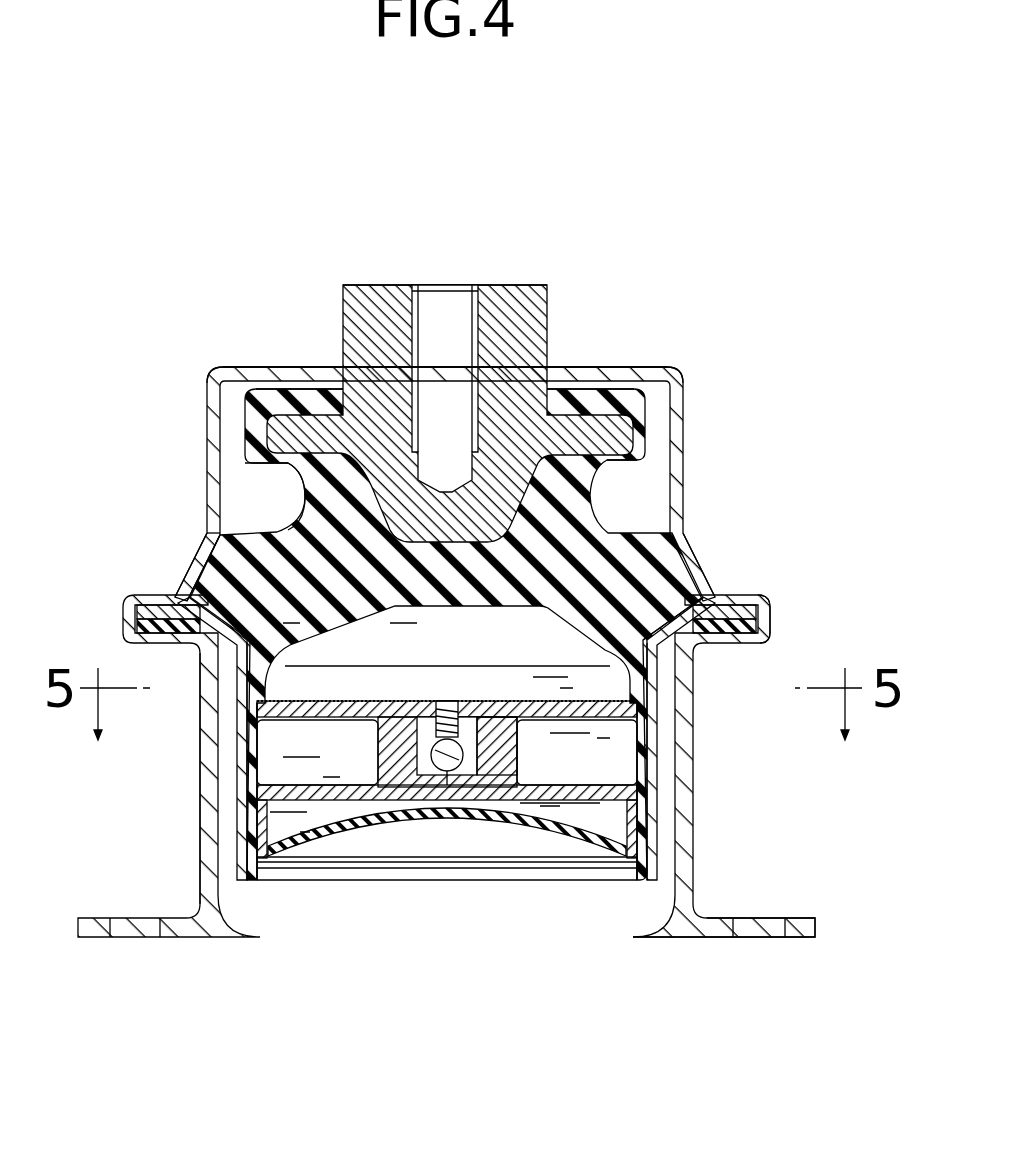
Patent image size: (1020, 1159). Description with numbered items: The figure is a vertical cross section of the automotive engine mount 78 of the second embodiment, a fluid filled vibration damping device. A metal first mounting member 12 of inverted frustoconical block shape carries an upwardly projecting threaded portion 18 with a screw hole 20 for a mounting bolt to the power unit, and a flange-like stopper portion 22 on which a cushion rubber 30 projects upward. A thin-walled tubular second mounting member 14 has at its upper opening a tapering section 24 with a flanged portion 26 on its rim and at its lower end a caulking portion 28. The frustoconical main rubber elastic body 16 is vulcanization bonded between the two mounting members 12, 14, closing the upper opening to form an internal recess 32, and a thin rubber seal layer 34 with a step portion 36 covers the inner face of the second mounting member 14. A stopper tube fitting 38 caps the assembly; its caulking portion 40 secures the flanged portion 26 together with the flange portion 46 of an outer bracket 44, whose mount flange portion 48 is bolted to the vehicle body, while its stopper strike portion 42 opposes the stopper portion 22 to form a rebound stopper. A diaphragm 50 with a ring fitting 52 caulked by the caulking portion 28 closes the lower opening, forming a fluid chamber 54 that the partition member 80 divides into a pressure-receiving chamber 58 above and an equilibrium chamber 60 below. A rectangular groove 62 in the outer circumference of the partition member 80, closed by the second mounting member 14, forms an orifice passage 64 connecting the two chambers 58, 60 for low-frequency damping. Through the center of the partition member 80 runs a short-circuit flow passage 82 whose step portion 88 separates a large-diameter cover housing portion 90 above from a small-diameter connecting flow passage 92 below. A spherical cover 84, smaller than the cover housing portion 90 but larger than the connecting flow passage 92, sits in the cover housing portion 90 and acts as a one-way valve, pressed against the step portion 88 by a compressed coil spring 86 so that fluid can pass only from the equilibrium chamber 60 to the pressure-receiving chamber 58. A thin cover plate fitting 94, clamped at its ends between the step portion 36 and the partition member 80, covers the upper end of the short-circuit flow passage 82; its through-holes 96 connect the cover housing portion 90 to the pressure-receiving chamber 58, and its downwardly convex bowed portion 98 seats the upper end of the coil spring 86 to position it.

The first mounting member 12 is at (370, 276).
The second mounting member 14 is at (668, 716).
The main rubber elastic body 16 is at (367, 690).
The threaded portion 18 is at (525, 322).
The screw hole 20 is at (471, 300).
The stopper portion 22 is at (600, 430).
The tapering section 24 is at (667, 647).
The flanged portion 26 is at (727, 606).
The caulking portion 28 is at (247, 882).
The cushion rubber 30 is at (298, 400).
The internal recess 32 is at (577, 652).
The rubber seal layer 34 is at (655, 848).
The step portion 36 is at (350, 718).
The stopper tube fitting 38 is at (688, 457).
The caulking portion 40 is at (766, 612).
The stopper strike portion 42 is at (647, 372).
The outer bracket 44 is at (198, 858).
The flange portion 46 is at (735, 621).
The mount flange portion 48 is at (800, 925).
The diaphragm 50 is at (317, 845).
The ring fitting 52 is at (613, 850).
The fluid chamber 54 is at (550, 632).
The pressure-receiving chamber 58 is at (436, 645).
The equilibrium chamber 60 is at (617, 824).
The rectangular groove 62 is at (600, 767).
The orifice passage 64 is at (620, 745).
The automotive engine mount 78 is at (643, 240).
The partition member 80 is at (562, 808).
The short-circuit flow passage 82 is at (410, 986).
The cover 84 is at (440, 750).
The coil spring 86 is at (435, 716).
The step portion 88 is at (488, 760).
The cover housing portion 90 is at (436, 772).
The connecting flow passage 92 is at (452, 786).
The cover plate fitting 94 is at (200, 596).
The through-holes 96 is at (250, 592).
The bowed portion 98 is at (447, 703).